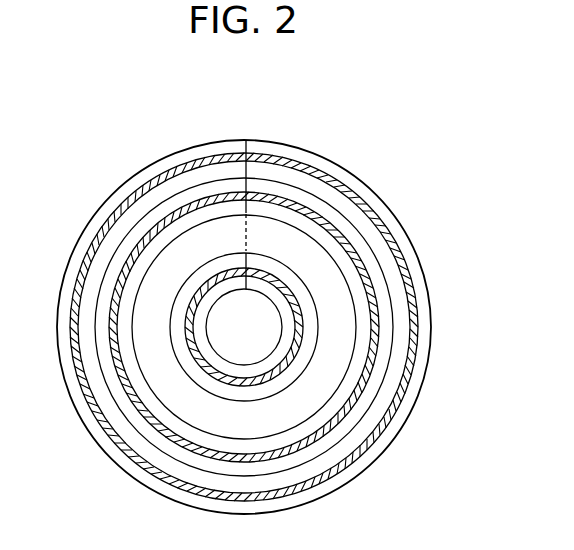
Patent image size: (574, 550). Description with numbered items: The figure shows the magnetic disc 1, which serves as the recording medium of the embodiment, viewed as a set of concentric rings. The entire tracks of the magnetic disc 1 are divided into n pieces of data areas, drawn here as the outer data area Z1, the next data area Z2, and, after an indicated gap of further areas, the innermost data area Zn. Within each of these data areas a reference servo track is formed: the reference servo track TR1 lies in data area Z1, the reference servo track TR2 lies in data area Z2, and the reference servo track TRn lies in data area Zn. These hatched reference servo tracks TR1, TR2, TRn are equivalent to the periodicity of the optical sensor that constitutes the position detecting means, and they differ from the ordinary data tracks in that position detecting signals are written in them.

The magnetic disc 1 is at (433, 342).
The reference servo track TR1 is at (358, 192).
The reference servo track TR2 is at (355, 255).
The reference servo track TRn is at (294, 300).
The data area Z1 is at (247, 158).
The data area Z2 is at (252, 186).
The data area Zn is at (252, 264).